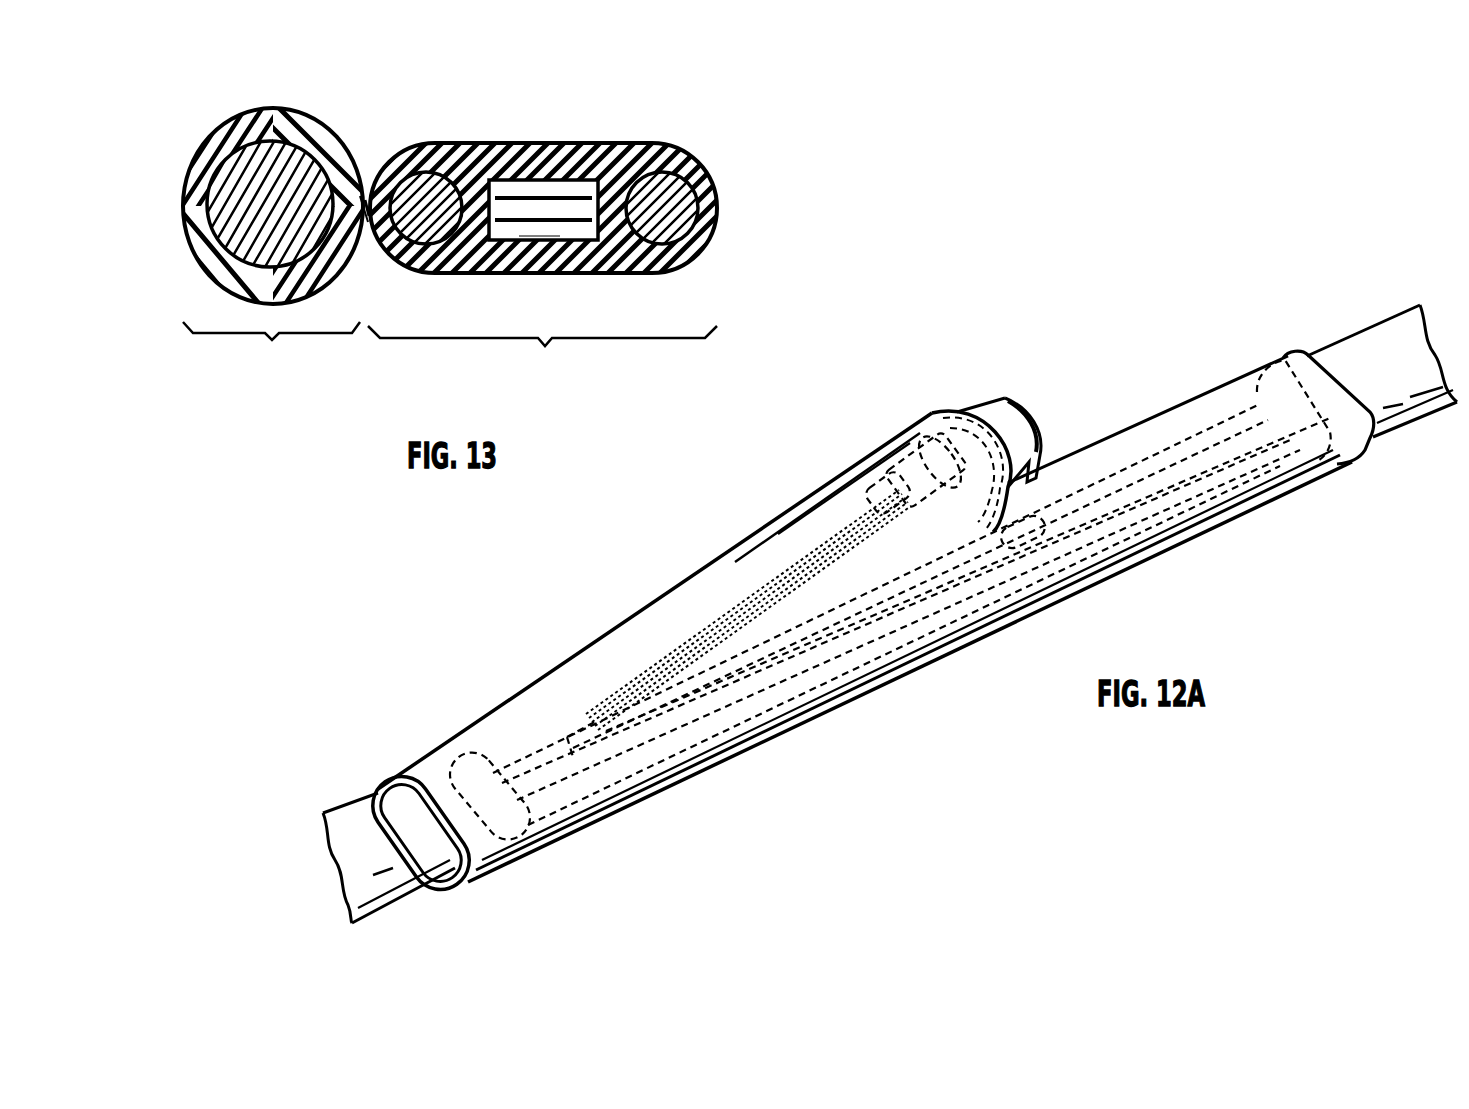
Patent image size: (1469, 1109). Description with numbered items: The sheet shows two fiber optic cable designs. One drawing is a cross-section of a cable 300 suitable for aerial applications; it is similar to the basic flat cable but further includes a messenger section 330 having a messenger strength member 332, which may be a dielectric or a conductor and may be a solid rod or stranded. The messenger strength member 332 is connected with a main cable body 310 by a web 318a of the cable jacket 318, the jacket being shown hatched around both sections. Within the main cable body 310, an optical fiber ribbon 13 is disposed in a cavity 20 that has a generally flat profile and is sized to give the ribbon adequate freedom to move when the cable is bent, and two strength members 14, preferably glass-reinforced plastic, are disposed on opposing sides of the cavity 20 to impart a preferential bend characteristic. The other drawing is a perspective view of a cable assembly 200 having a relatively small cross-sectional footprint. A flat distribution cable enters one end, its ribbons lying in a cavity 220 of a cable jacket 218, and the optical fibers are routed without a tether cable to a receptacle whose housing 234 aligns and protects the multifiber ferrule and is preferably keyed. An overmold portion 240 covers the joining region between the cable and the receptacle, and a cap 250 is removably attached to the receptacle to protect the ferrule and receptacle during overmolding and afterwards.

In FIG. 13, the cable 300 is at (186, 108).
In FIG. 13, the cable jacket 318 is at (190, 182).
In FIG. 13, the messenger strength member 332 is at (230, 222).
In FIG. 13, the web 318a is at (363, 190).
In FIG. 13, the optical fiber ribbon 13 is at (523, 203).
In FIG. 13, the strength member 14 is at (428, 230).
In FIG. 13, the cavity 20 is at (523, 228).
In FIG. 13, the messenger section 330 is at (271, 354).
In FIG. 13, the main cable body 310 is at (542, 357).
In FIG. 12A, the cable assembly 200 is at (585, 553).
In FIG. 12A, the overmold portion 240 is at (718, 562).
In FIG. 12A, the cable jacket 218 is at (450, 760).
In FIG. 12A, the housing 234 is at (955, 425).
In FIG. 12A, the cap 250 is at (992, 418).
In FIG. 12A, the cavity 220 is at (1375, 352).